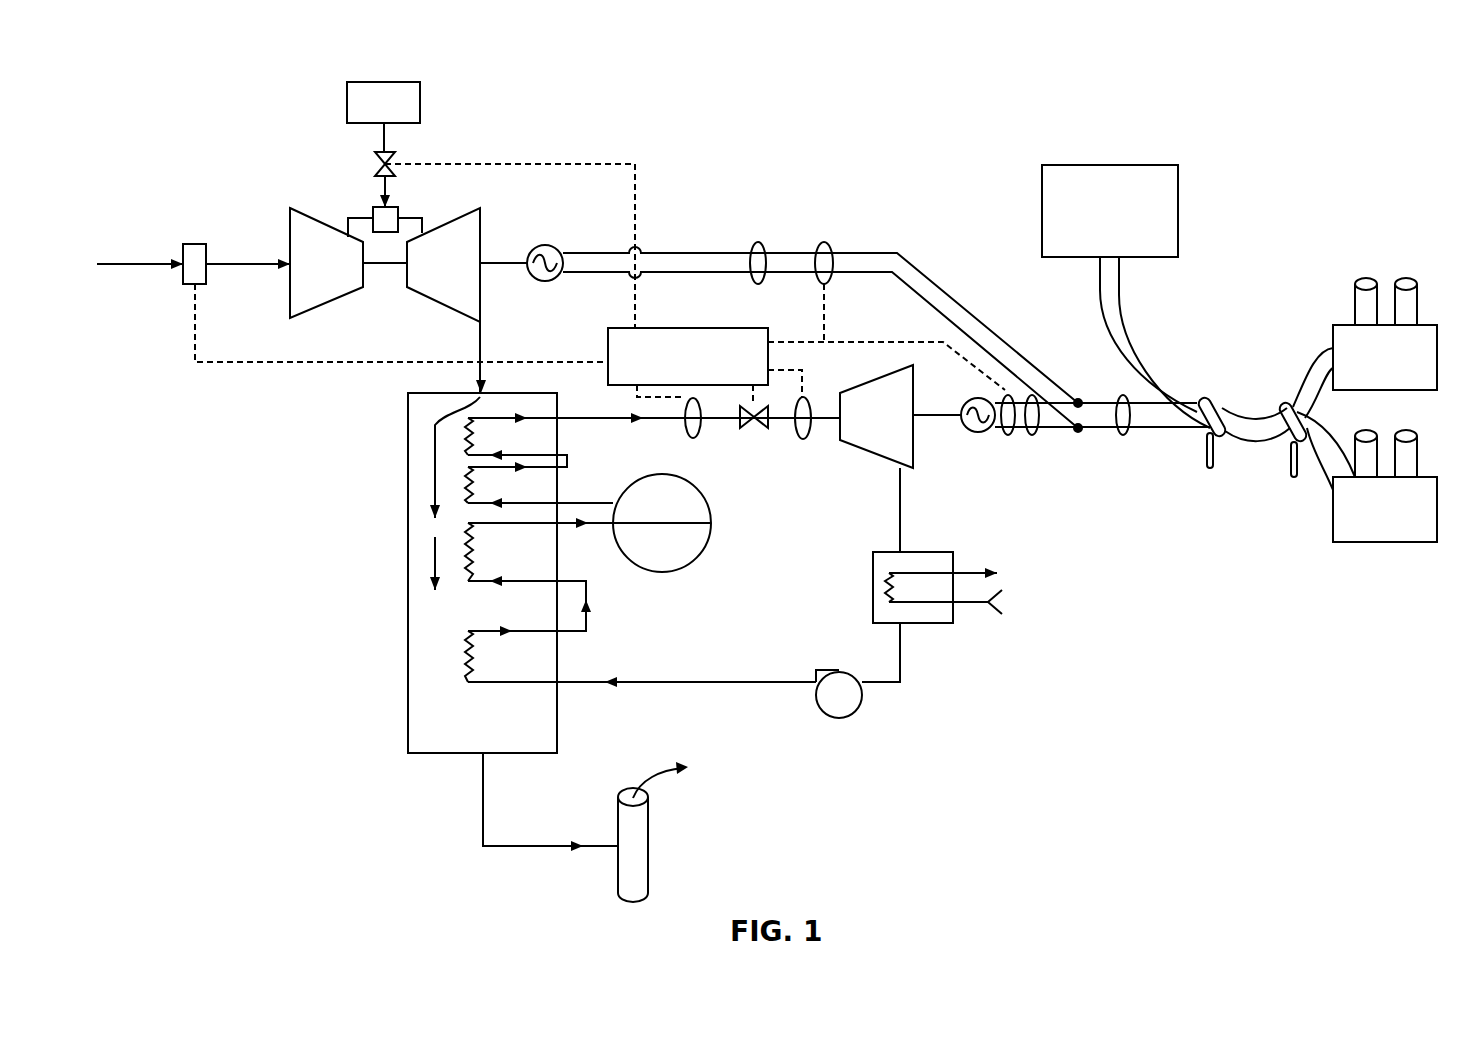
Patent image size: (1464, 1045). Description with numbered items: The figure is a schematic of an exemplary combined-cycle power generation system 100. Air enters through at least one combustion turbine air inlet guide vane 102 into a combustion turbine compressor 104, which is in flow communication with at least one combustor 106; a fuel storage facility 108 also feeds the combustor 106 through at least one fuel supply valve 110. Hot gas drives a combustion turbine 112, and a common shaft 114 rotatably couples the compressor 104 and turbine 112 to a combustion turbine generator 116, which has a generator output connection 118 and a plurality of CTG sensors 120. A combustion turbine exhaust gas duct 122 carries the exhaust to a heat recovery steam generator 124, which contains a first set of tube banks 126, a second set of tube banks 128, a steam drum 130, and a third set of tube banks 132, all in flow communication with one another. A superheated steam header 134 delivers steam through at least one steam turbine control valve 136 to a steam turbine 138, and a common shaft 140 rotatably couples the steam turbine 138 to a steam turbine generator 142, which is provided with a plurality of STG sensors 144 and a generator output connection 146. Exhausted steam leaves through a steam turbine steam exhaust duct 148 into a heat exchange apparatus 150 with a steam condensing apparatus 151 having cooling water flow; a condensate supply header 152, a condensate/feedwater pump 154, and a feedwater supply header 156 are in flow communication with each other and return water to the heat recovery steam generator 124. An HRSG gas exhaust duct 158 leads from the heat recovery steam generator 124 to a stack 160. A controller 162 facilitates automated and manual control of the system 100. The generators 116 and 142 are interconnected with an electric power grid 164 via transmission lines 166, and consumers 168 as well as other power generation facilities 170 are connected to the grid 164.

The combined-cycle power generation system 100 is at (188, 82).
The combustion turbine air inlet guide vane 102 is at (193, 243).
The combustion turbine compressor 104 is at (350, 278).
The combustor 106 is at (373, 210).
The fuel storage facility 108 is at (407, 116).
The fuel supply valve 110 is at (390, 157).
The combustion turbine 112 is at (466, 278).
The common shaft 114 is at (387, 265).
The combustion turbine generator 116 is at (548, 246).
The generator output connection 118 is at (758, 243).
The CTG sensors 120 is at (826, 243).
The combustion turbine exhaust gas duct 122 is at (485, 356).
The heat recovery steam generator 124 is at (557, 688).
The first set of tube banks 126 is at (467, 653).
The second set of tube banks 128 is at (467, 543).
The steam drum 130 is at (685, 561).
The third set of tube banks 132 is at (445, 464).
The superheated steam header 134 is at (613, 419).
The steam turbine control valve 136 is at (763, 429).
The steam turbine 138 is at (900, 430).
The common shaft 140 is at (932, 418).
The steam turbine generator 142 is at (978, 433).
The STG sensors 144 is at (692, 439).
The generator output connection 146 is at (1078, 428).
The steam turbine steam exhaust duct 148 is at (900, 537).
The heat exchange apparatus 150 is at (912, 552).
The steam condensing apparatus 151 is at (968, 572).
The condensate supply header 152 is at (900, 645).
The condensate/feedwater pump 154 is at (847, 698).
The feedwater supply header 156 is at (752, 684).
The HRSG gas exhaust duct 158 is at (483, 800).
The stack 160 is at (648, 847).
The controller 162 is at (710, 371).
The electric power grid 164 is at (1240, 412).
The transmission lines 166 is at (1127, 435).
The consumers 168 is at (1133, 226).
The other power generation facilities 170 is at (1408, 371).